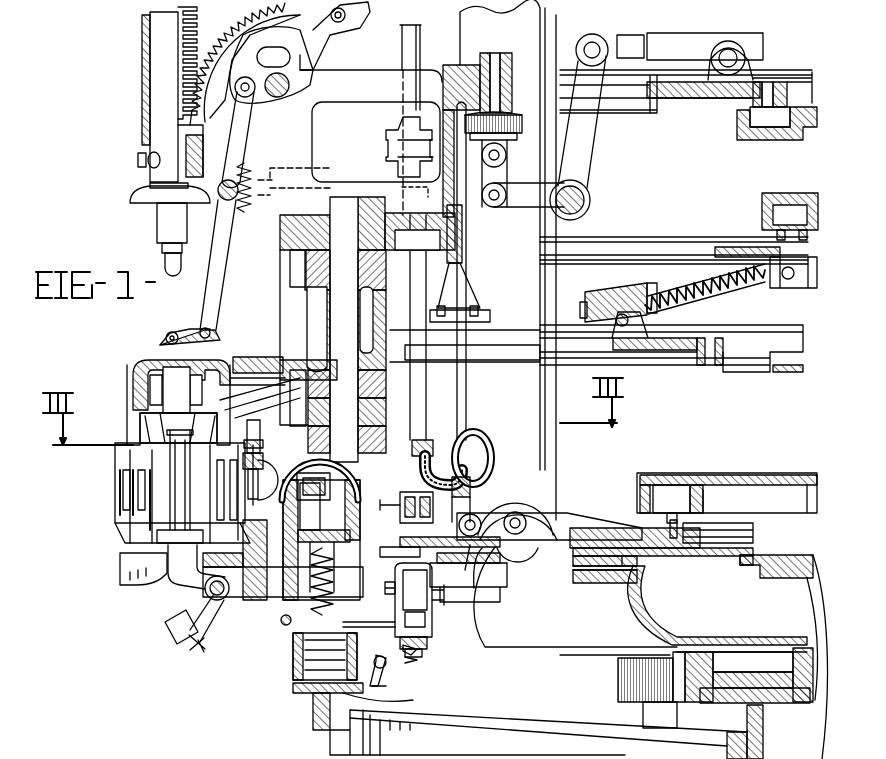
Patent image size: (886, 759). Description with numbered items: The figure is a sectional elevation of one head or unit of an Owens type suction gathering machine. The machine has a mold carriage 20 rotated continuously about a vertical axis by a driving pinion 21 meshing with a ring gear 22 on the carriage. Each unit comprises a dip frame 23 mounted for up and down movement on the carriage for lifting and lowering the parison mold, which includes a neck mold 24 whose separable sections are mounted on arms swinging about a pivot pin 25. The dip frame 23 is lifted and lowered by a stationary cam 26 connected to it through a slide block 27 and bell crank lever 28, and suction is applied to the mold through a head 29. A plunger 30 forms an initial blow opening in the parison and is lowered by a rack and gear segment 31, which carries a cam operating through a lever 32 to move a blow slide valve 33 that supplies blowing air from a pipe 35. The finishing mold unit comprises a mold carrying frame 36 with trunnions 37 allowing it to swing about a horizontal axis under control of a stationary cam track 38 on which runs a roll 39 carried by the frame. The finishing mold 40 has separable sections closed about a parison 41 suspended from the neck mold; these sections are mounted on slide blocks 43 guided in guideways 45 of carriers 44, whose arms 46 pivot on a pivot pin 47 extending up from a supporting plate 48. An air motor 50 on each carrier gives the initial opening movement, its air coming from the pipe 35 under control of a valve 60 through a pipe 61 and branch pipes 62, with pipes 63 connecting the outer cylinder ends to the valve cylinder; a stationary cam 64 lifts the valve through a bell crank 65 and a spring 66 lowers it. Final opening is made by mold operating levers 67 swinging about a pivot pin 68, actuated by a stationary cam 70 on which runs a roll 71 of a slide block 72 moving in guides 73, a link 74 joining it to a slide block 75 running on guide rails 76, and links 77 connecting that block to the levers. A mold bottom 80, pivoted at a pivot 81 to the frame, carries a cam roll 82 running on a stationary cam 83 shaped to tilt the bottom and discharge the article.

The mold carriage 20 is at (555, 458).
The driving pinion 21 is at (618, 683).
The ring gear 22 is at (642, 645).
The dip frame 23 is at (464, 247).
The neck mold 24 is at (140, 426).
The pivot pin 25 is at (342, 321).
The stationary cam 26 is at (737, 130).
The slide block 27 is at (683, 97).
The bell crank lever 28 is at (594, 154).
The head 29 is at (142, 364).
The plunger 30 is at (165, 230).
The rack and gear segment 31 is at (218, 42).
The lever 32 is at (238, 127).
The blow slide valve 33 is at (168, 332).
The pipe 35 is at (400, 51).
The mold carrying frame 36 is at (250, 593).
The trunnions 37 is at (525, 516).
The stationary cam track 38 is at (306, 695).
The roll 39 is at (292, 682).
The finishing mold 40 is at (150, 510).
The parison 41 is at (172, 466).
The slide blocks 43 is at (134, 500).
The carriers 44 is at (120, 488).
The guideways 45 is at (134, 530).
The arms 46 is at (255, 463).
The pivot pin 47 is at (260, 453).
The supporting plate 48 is at (223, 580).
The air motor 50 is at (258, 492).
The valve 60 is at (426, 610).
The pipe 61 is at (369, 633).
The branch pipes 62 is at (281, 625).
The pipes 63 is at (338, 490).
The stationary cam 64 is at (405, 698).
The bell crank 65 is at (385, 683).
The spring 66 is at (418, 655).
The mold operating levers 67 is at (415, 502).
The pivot pin 68 is at (333, 477).
The stationary cam 70 is at (637, 493).
The roll 71 is at (693, 502).
The slide block 72 is at (612, 538).
The guides 73 is at (744, 540).
The link 74 is at (506, 510).
The slide block 75 is at (478, 492).
The guide rails 76 is at (475, 570).
The links 77 is at (402, 504).
The mold bottom 80 is at (128, 570).
The pivot 81 is at (190, 588).
The cam roll 82 is at (167, 619).
The stationary cam 83 is at (192, 647).